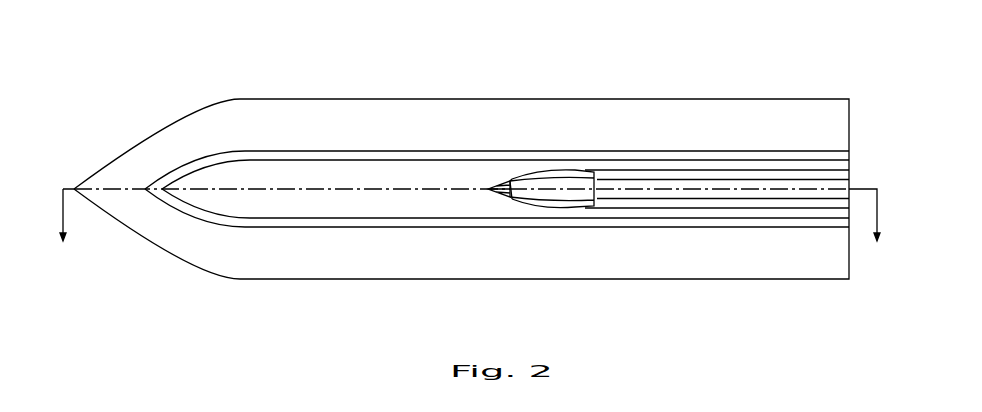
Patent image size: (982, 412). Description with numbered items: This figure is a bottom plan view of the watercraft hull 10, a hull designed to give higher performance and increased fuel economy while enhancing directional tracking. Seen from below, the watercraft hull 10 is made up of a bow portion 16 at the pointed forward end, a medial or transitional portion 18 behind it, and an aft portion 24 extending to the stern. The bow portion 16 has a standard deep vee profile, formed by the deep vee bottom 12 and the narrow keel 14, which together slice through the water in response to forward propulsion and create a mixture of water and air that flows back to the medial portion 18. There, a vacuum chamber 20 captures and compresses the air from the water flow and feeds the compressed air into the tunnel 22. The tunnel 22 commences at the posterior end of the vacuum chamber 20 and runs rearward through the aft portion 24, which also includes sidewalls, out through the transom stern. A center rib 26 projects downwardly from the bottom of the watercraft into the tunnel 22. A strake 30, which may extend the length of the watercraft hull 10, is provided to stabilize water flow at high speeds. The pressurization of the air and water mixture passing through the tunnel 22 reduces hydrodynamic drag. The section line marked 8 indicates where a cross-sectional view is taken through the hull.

The section line 8- 8 is at (470, 235).
The watercraft hull 10 is at (461, 155).
The deep vee bottom 12 is at (165, 118).
The narrow keel 14 is at (242, 190).
The bow portion 16 is at (328, 113).
The medial portion 18 is at (543, 212).
The vacuum chamber 20 is at (522, 180).
The tunnel 22 is at (678, 170).
The aft portion 24 is at (790, 114).
The center rib 26 is at (763, 189).
The strake 30 is at (397, 151).